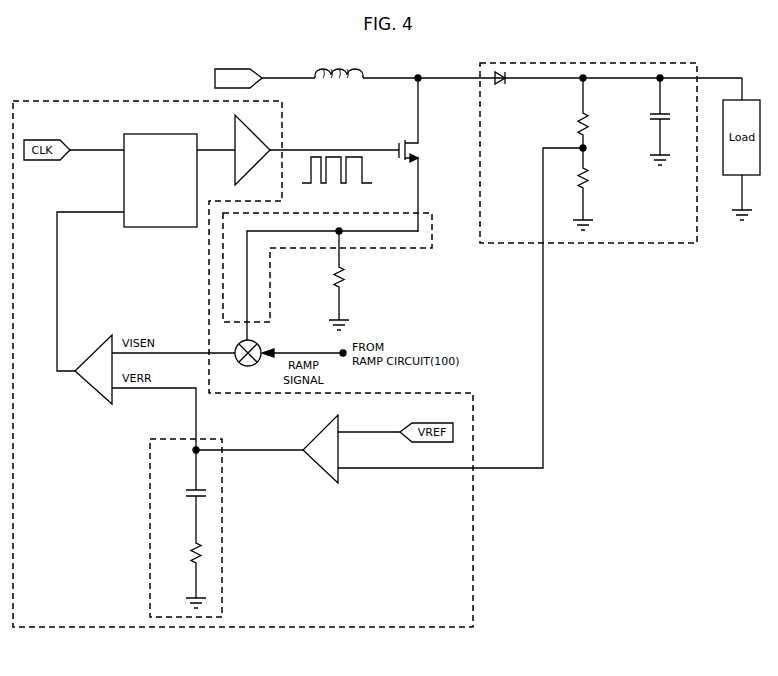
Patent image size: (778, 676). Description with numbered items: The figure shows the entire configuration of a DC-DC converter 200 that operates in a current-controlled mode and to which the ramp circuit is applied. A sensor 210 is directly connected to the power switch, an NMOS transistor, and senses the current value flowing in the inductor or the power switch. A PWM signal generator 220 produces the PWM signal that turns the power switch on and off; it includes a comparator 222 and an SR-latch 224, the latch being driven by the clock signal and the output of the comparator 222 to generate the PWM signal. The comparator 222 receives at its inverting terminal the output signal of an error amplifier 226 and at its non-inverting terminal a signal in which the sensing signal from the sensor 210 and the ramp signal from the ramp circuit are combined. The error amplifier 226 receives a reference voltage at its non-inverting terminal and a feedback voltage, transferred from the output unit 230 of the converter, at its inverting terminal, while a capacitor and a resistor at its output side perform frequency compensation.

The DC-DC converter 200 is at (391, 59).
The sensor 210 is at (270, 287).
The PWM signal generator 220 is at (473, 518).
The comparator 222 is at (95, 390).
The SR-latch 224 is at (162, 228).
The error amplifier 226 is at (320, 470).
The output unit 230 is at (588, 244).